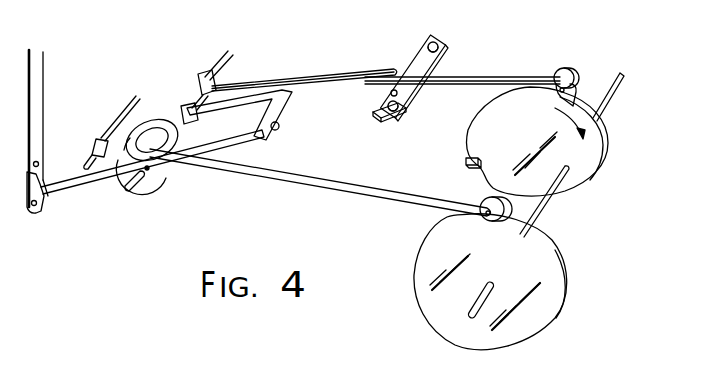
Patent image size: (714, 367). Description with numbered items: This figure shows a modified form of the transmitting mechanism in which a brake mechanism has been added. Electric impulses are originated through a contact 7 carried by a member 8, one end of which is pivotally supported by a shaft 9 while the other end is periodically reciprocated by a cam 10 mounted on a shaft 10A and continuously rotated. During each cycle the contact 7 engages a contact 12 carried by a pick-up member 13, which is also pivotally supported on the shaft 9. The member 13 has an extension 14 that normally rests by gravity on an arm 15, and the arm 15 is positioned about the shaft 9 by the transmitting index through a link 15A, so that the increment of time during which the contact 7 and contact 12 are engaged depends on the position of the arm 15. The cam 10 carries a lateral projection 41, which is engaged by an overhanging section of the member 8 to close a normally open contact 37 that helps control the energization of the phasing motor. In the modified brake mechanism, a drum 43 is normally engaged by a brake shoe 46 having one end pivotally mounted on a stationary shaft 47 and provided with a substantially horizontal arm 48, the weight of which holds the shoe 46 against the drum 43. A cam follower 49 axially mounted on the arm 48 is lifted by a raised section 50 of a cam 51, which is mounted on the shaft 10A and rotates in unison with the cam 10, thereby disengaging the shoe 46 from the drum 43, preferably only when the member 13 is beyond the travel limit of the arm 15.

The contact 7 is at (404, 106).
The member 8 is at (478, 78).
The shaft 9 is at (225, 56).
The cam 10 is at (595, 194).
The shaft 10A is at (612, 107).
The contact 12 is at (392, 94).
The pick-up member 13 is at (369, 72).
The extension 14 is at (290, 109).
The arm 15 is at (243, 146).
The link 15A is at (44, 96).
The contact 37 is at (434, 44).
The lateral projection 41 is at (465, 163).
The drum 43 is at (153, 183).
The brake shoe 46 is at (136, 128).
The stationary shaft 47 is at (123, 124).
The arm 48 is at (290, 186).
The cam follower 49 is at (483, 194).
The raised section 50 is at (420, 248).
The cam 51 is at (562, 310).